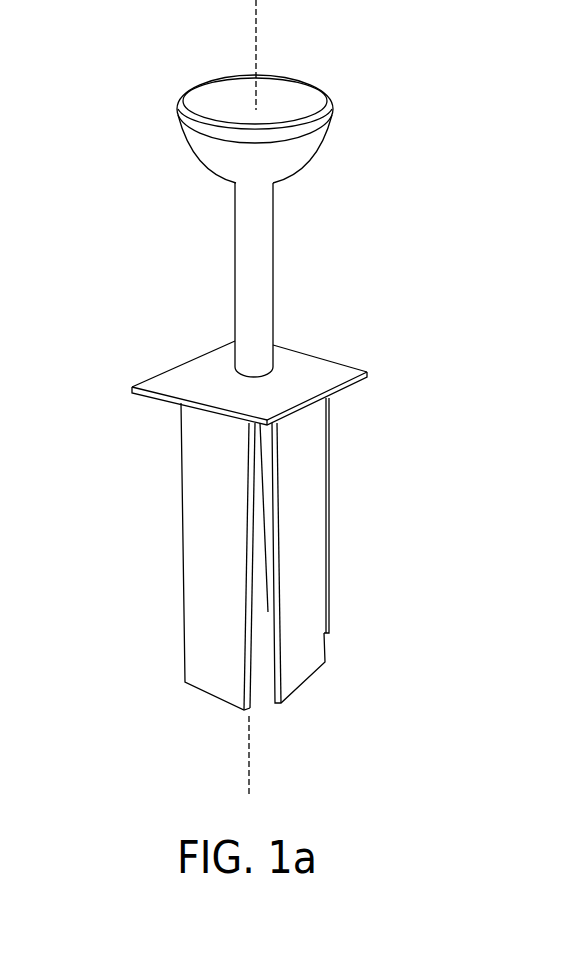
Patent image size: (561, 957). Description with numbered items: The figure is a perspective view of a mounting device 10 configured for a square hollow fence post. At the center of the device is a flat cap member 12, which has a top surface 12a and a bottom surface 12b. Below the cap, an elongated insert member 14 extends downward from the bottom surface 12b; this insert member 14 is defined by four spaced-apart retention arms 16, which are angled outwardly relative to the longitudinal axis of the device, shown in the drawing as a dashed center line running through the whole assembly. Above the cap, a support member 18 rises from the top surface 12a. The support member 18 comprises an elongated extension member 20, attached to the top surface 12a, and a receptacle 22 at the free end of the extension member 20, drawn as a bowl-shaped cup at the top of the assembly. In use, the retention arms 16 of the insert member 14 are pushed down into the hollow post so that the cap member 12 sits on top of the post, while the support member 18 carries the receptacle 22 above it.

The mounting device 10 is at (185, 238).
The cap member 12 is at (343, 362).
The top surface 12a is at (193, 372).
The bottom surface 12b is at (160, 398).
The elongated insert member 14 is at (160, 585).
The retention arms 16 is at (300, 523).
The support member 18 is at (458, 53).
The extension member 20 is at (263, 253).
The receptacle 22 is at (322, 92).